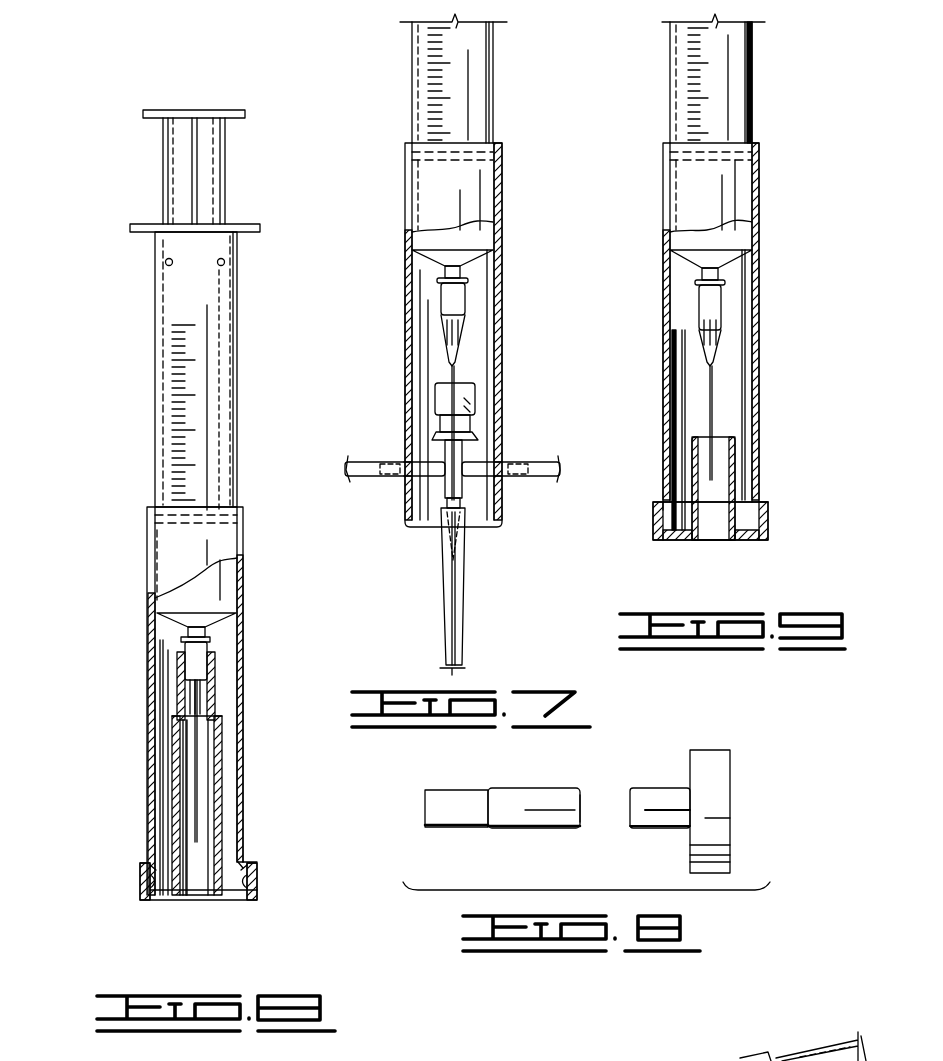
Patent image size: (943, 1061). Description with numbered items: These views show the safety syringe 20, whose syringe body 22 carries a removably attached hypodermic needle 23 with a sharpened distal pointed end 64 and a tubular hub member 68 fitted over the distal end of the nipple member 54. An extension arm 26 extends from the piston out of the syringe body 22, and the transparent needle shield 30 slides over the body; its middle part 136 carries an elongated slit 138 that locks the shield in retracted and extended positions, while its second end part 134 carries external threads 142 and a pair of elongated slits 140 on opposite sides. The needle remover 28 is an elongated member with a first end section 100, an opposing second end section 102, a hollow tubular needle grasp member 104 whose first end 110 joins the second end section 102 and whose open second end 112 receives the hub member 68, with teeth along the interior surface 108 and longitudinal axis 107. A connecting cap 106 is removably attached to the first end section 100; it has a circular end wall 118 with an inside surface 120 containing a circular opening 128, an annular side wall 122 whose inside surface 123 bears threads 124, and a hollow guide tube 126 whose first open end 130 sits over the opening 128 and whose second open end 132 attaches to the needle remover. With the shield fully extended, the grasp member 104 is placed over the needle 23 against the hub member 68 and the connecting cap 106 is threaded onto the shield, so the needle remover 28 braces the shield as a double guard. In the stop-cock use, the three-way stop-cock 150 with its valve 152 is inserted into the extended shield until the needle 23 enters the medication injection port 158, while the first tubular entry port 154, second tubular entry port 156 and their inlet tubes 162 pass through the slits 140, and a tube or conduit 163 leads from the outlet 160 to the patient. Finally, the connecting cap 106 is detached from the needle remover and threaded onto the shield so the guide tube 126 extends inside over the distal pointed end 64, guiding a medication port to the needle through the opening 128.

In FIG. 6, the safety syringe 20 is at (87, 69).
In FIG. 7, the safety syringe 20 is at (362, 73).
In FIG. 9, the safety syringe 20 is at (790, 63).
In FIG. 8, the safety syringe 20 is at (815, 1005).
In FIG. 6, the syringe body 22 is at (155, 278).
In FIG. 7, the syringe body 22 is at (493, 81).
In FIG. 9, the syringe body 22 is at (713, 78).
In FIG. 6, the hypodermic needle 23 is at (196, 780).
In FIG. 7, the hypodermic needle 23 is at (450, 371).
In FIG. 9, the hypodermic needle 23 is at (715, 382).
In FIG. 6, the extension arm 26 is at (163, 169).
In FIG. 6, the needle remover 28 is at (175, 813).
In FIG. 6, the needle shield 30 is at (147, 550).
In FIG. 7, the needle shield 30 is at (503, 406).
In FIG. 9, the needle shield 30 is at (760, 403).
In FIG. 6, the nipple member 54 is at (205, 632).
In FIG. 7, the nipple member 54 is at (455, 271).
In FIG. 9, the nipple member 54 is at (711, 267).
In FIG. 6, the distal pointed end 64 is at (200, 843).
In FIG. 6, the hub member 68 is at (195, 654).
In FIG. 7, the hub member 68 is at (455, 300).
In FIG. 9, the hub member 68 is at (710, 325).
In FIG. 8, the first end section 100 is at (580, 820).
In FIG. 8, the second end section 102 is at (540, 830).
In FIG. 6, the needle grasp member 104 is at (210, 680).
In FIG. 8, the needle grasp member 104 is at (510, 790).
In FIG. 6, the connecting cap 106 is at (145, 896).
In FIG. 9, the connecting cap 106 is at (660, 540).
In FIG. 8, the connecting cap 106 is at (730, 774).
In FIG. 8, the longitudinal axis 107 is at (515, 815).
In FIG. 8, the interior surface 108 is at (425, 795).
In FIG. 8, the first end 110 is at (540, 830).
In FIG. 8, the second end 112 is at (425, 822).
In FIG. 6, the circular end wall 118 is at (218, 903).
In FIG. 8, the circular end wall 118 is at (730, 793).
In FIG. 6, the inside surface 120 is at (240, 902).
In FIG. 9, the inside surface 120 is at (690, 541).
In FIG. 6, the annular side wall 122 is at (255, 871).
In FIG. 9, the annular side wall 122 is at (768, 516).
In FIG. 8, the annular side wall 122 is at (715, 752).
In FIG. 6, the inside surface 123 is at (238, 866).
In FIG. 9, the inside surface 123 is at (670, 507).
In FIG. 6, the threads 124 is at (148, 880).
In FIG. 9, the guide tube 126 is at (735, 451).
In FIG. 8, the guide tube 126 is at (673, 830).
In FIG. 6, the circular opening 128 is at (192, 903).
In FIG. 9, the circular opening 128 is at (710, 542).
In FIG. 8, the circular opening 128 is at (722, 819).
In FIG. 9, the first open end 130 is at (720, 542).
In FIG. 8, the second open end 132 is at (580, 800).
In FIG. 7, the second end part 134 is at (425, 530).
In FIG. 6, the middle part 136 is at (243, 738).
In FIG. 6, the elongated slit 138 is at (150, 513).
In FIG. 7, the elongated slits 140 is at (405, 479).
In FIG. 6, the threads 142 is at (147, 886).
In FIG. 7, the 3-way stop-cock 150 is at (447, 491).
In FIG. 7, the valve 152 is at (480, 495).
In FIG. 7, the first tubular entry port 154 is at (420, 466).
In FIG. 7, the second tubular entry port 156 is at (475, 479).
In FIG. 7, the medication injection port 158 is at (470, 396).
In FIG. 7, the outlet 160 is at (462, 560).
In FIG. 7, the inlet tubes 162 is at (372, 461).
In FIG. 7, the tube or conduit 163 is at (445, 600).